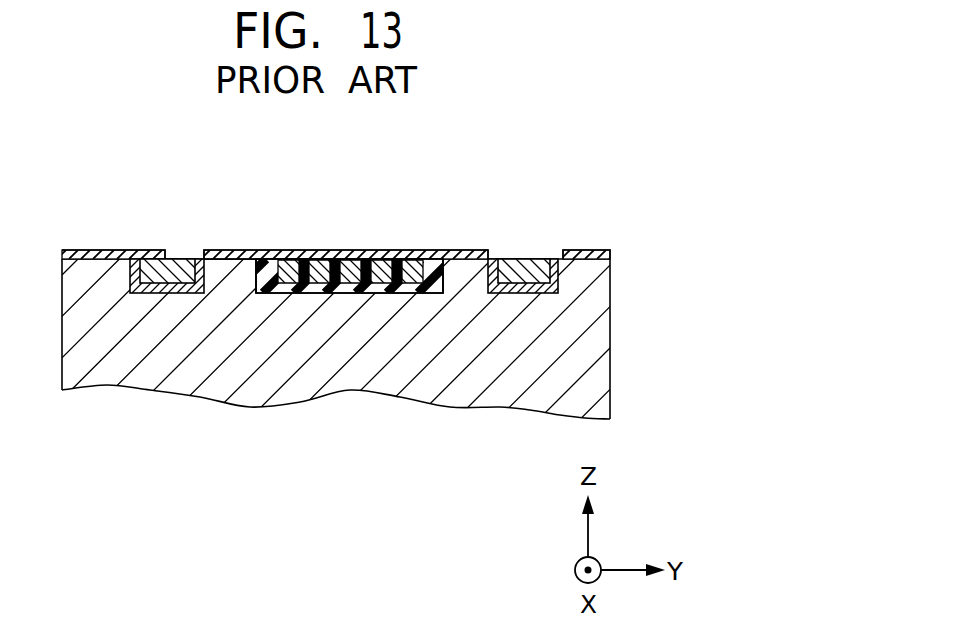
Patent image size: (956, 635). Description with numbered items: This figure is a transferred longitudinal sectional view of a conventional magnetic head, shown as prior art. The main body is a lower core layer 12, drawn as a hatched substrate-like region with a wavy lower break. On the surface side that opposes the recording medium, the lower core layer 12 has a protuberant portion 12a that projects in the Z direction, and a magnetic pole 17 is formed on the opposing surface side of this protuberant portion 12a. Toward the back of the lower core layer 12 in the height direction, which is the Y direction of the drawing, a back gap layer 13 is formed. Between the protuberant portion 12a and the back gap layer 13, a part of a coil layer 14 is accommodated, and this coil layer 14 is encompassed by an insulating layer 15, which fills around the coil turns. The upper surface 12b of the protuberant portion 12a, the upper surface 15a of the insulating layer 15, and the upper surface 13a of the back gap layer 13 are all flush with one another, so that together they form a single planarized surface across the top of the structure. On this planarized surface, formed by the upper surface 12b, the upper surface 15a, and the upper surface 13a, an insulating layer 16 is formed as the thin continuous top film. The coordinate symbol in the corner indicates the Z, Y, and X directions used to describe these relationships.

The lower core layer 12 is at (587, 332).
The protuberant portion 12a is at (238, 283).
The upper surface of the protuberant portion 12b is at (219, 258).
The back gap layer 13 is at (467, 280).
The upper surface of the back gap layer 13a is at (463, 256).
The coil layer 14 is at (417, 293).
The insulating layer 15 is at (437, 250).
The upper surface of the insulating layer 15a is at (264, 256).
The insulating layer 16 is at (362, 250).
The magnetic pole 17 is at (158, 306).